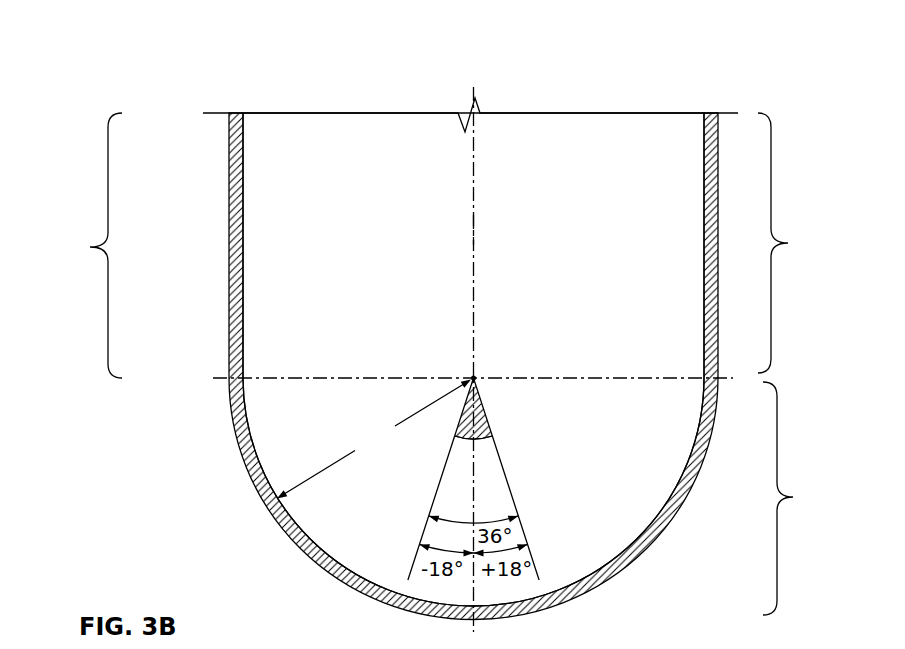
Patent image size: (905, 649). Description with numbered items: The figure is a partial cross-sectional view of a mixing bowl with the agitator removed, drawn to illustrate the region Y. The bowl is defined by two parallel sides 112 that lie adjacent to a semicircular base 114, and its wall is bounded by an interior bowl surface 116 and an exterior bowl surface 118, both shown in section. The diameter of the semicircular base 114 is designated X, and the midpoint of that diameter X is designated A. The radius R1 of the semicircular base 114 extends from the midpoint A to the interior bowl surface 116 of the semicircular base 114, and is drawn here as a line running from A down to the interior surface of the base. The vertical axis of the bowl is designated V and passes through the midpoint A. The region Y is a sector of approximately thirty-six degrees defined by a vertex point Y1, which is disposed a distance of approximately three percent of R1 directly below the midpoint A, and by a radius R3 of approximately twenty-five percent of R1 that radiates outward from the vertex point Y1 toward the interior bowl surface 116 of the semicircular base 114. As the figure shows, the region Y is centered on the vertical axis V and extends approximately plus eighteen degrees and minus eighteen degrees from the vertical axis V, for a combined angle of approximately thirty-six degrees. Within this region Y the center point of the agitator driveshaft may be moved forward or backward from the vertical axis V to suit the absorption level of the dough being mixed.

The parallel sides 112 is at (441, 245).
The semicircular base 114 is at (803, 498).
The interior bowl surface 116 is at (253, 250).
The exterior bowl surface 118 is at (219, 205).
The diameter of the semicircular base X is at (473, 332).
The vertical axis V is at (474, 230).
The midpoint of the diameter A is at (477, 376).
The vertex point Y1 is at (478, 383).
The region Y is at (452, 445).
The radius of the semicircular base R1 is at (374, 439).
The radius of region Y R3 is at (458, 428).